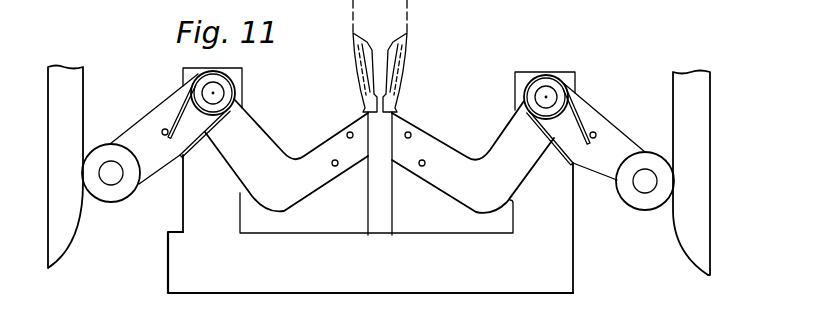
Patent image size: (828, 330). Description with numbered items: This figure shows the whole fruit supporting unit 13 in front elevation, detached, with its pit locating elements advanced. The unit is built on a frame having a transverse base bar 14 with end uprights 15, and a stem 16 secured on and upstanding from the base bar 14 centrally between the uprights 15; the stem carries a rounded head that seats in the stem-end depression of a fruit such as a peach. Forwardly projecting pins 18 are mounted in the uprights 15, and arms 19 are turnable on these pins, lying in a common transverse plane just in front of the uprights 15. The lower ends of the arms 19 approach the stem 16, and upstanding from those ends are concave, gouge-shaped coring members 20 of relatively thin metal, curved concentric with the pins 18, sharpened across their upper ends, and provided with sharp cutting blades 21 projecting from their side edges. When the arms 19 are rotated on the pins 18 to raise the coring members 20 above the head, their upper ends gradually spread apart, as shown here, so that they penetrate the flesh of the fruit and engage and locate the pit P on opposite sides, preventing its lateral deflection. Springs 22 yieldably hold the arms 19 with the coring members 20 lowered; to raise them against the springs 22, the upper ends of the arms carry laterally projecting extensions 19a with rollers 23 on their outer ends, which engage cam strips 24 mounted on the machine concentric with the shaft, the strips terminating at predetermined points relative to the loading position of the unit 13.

The whole fruit supporting unit 13 is at (580, 243).
The transverse base bar 14 is at (503, 277).
The end uprights 15 is at (190, 190).
The stem 16 is at (380, 192).
The pins 18 is at (215, 94).
The arms 19 is at (295, 157).
The extensions 19a is at (148, 126).
The coring members 20 is at (376, 88).
The cutting blades 21 is at (370, 58).
The springs 22 is at (212, 128).
The rollers 23 is at (108, 200).
The cam strips 24 is at (60, 117).
The pit P is at (408, 22).